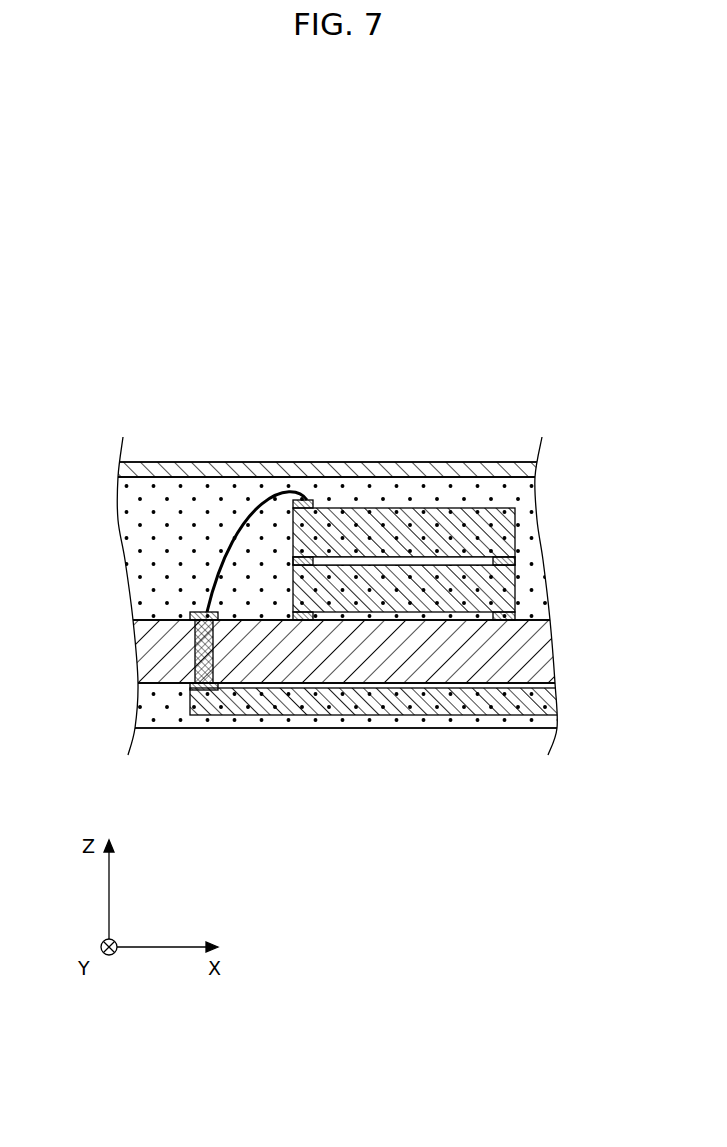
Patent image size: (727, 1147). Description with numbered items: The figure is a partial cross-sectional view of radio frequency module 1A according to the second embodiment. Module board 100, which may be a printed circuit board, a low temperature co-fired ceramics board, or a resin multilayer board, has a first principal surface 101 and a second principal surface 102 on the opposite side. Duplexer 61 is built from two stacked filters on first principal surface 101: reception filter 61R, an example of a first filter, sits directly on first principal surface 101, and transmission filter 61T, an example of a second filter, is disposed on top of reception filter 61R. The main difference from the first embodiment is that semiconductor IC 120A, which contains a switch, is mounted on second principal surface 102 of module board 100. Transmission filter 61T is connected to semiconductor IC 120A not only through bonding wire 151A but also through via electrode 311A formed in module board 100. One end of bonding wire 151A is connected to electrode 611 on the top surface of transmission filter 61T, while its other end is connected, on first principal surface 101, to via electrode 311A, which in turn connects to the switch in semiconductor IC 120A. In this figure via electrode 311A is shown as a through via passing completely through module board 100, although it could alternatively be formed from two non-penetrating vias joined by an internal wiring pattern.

The radio frequency module 1A is at (528, 378).
The duplexer 61 is at (448, 424).
The transmission filter 61T is at (368, 508).
The reception filter 61R is at (412, 568).
The electrode 611 is at (310, 500).
The bonding wire 151A is at (255, 490).
The via electrode 311A is at (198, 610).
The first principal surface 101 is at (163, 618).
The module board 100 is at (153, 655).
The second principal surface 102 is at (163, 684).
The semiconductor IC 120A is at (427, 718).